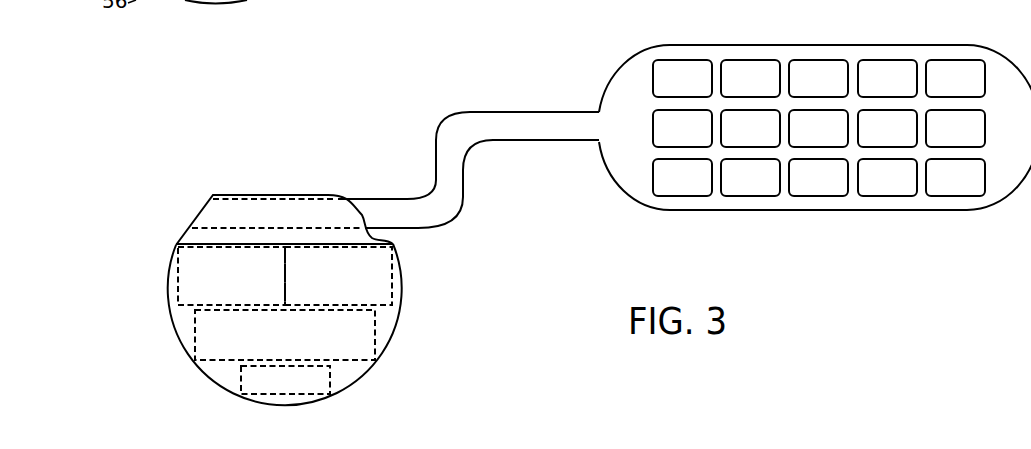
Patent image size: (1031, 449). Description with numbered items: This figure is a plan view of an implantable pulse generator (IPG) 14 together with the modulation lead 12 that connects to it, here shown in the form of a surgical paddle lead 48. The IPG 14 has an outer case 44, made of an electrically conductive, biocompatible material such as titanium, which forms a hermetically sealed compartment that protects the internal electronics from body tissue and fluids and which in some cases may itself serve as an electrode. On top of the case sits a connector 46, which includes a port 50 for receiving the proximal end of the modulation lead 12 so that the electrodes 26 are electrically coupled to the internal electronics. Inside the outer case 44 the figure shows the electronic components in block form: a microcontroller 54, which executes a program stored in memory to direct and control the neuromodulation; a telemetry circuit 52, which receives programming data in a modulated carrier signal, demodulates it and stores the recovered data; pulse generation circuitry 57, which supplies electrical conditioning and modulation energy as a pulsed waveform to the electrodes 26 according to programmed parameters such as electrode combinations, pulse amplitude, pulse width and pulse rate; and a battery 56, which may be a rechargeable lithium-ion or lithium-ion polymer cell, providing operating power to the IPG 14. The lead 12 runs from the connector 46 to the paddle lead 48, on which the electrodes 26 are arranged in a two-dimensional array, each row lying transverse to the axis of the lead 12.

The modulation lead 12 is at (453, 118).
The implantable pulse generator 14 is at (226, 167).
The electrodes 26 is at (815, 60).
The outer case 44 is at (378, 355).
The connector 46 is at (280, 195).
The surgical paddle lead 48 is at (630, 77).
The port 50 is at (194, 228).
The telemetry circuit 52 is at (392, 283).
The microcontroller 54 is at (178, 282).
The battery 56 is at (242, 378).
The pulse generation circuitry 57 is at (195, 331).